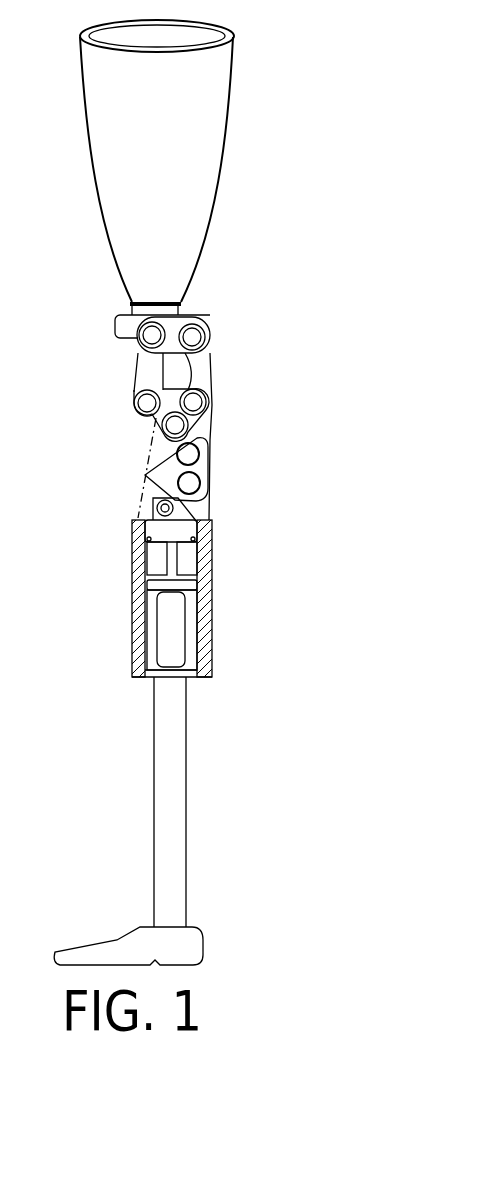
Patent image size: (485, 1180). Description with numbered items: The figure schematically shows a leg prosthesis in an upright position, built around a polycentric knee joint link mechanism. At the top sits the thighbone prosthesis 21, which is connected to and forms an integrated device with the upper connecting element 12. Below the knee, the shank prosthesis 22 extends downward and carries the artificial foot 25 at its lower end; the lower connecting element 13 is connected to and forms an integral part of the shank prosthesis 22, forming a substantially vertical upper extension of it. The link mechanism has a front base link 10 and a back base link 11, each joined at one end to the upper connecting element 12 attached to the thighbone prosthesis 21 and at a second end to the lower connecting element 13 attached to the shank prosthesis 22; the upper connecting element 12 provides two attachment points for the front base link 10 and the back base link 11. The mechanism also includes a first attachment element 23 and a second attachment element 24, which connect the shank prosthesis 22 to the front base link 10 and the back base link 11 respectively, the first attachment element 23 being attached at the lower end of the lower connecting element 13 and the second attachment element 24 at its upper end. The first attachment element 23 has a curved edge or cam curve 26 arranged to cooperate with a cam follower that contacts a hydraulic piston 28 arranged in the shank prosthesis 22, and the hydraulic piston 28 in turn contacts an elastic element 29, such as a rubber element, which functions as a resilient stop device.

The front base link 10 is at (131, 367).
The back base link 11 is at (218, 378).
The upper connecting element 12 is at (196, 310).
The lower connecting element 13 is at (140, 460).
The thighbone prosthesis 21 is at (195, 152).
The shank prosthesis 22 is at (172, 778).
The first attachment element 23 is at (220, 481).
The second attachment element 24 is at (139, 429).
The artificial foot 25 is at (180, 942).
The cam curve 26 is at (146, 498).
The hydraulic piston 28 is at (177, 533).
The elastic element 29 is at (176, 623).